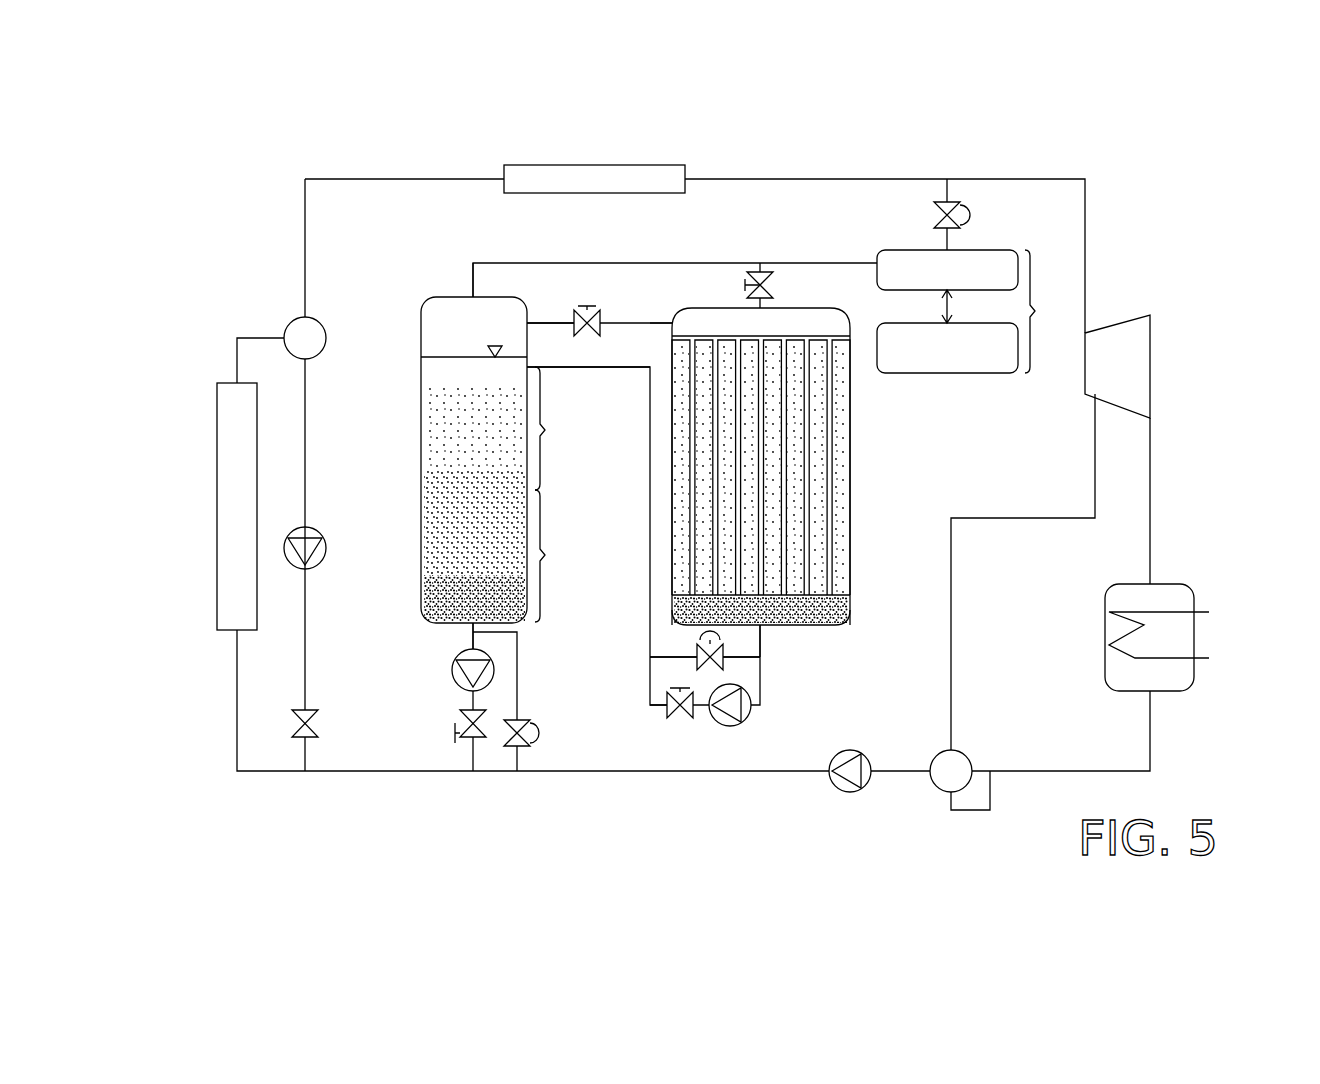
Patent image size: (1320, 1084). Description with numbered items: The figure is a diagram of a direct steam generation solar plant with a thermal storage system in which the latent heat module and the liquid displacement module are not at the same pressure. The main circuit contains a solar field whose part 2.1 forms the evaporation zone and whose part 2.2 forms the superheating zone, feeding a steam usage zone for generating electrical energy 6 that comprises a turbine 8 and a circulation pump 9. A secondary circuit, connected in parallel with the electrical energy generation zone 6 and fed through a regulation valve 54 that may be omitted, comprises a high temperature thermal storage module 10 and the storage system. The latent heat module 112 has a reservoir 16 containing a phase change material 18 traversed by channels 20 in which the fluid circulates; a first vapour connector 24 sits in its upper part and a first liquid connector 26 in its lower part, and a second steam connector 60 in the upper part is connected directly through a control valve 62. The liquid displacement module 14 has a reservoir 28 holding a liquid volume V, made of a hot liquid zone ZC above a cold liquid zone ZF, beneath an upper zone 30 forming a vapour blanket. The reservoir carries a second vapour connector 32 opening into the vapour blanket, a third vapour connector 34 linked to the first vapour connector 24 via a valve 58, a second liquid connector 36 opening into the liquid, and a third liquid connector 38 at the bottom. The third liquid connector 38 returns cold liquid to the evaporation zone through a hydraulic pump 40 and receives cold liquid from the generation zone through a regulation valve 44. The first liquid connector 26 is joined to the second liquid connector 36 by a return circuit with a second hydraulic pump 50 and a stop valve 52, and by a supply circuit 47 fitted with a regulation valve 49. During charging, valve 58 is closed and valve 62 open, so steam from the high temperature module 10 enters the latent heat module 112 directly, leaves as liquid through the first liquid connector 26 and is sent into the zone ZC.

The evaporation zone part of the solar field 2.1 is at (225, 460).
The superheating zone part of the solar field 2.2 is at (578, 193).
The electrical energy generation zone 6 is at (1162, 569).
The turbine 8 is at (1150, 355).
The circulation pump 9 is at (838, 786).
The high temperature thermal storage module 10 is at (976, 311).
The liquid displacement thermal storage module 14 is at (376, 465).
The reservoir 16 is at (852, 420).
The phase change material 18 is at (840, 550).
The channels 20 is at (840, 612).
The first vapour connector 24 is at (672, 320).
The first liquid connector 26 is at (762, 627).
The reservoir 28 is at (425, 298).
The upper zone / vapour blanket 30 is at (428, 338).
The second vapour connector 32 is at (470, 292).
The third vapour connector 34 is at (531, 320).
The second liquid connector 36 is at (528, 353).
The third liquid connector 38 is at (468, 628).
The hydraulic pump 40 is at (452, 672).
The regulation valve 44 is at (535, 738).
The supply circuit 47 is at (670, 649).
The regulation valve 49 is at (723, 650).
The second hydraulic pump 50 is at (748, 712).
The stop valve 52 is at (455, 733).
The regulation valve 54 is at (932, 215).
The valve 58 is at (588, 310).
The second steam connector 60 is at (770, 268).
The control valve 62 is at (775, 292).
The latent heat module 112 is at (855, 461).
The liquid volume V is at (420, 435).
The hot liquid zone ZC is at (562, 428).
The cold liquid zone ZF is at (560, 556).